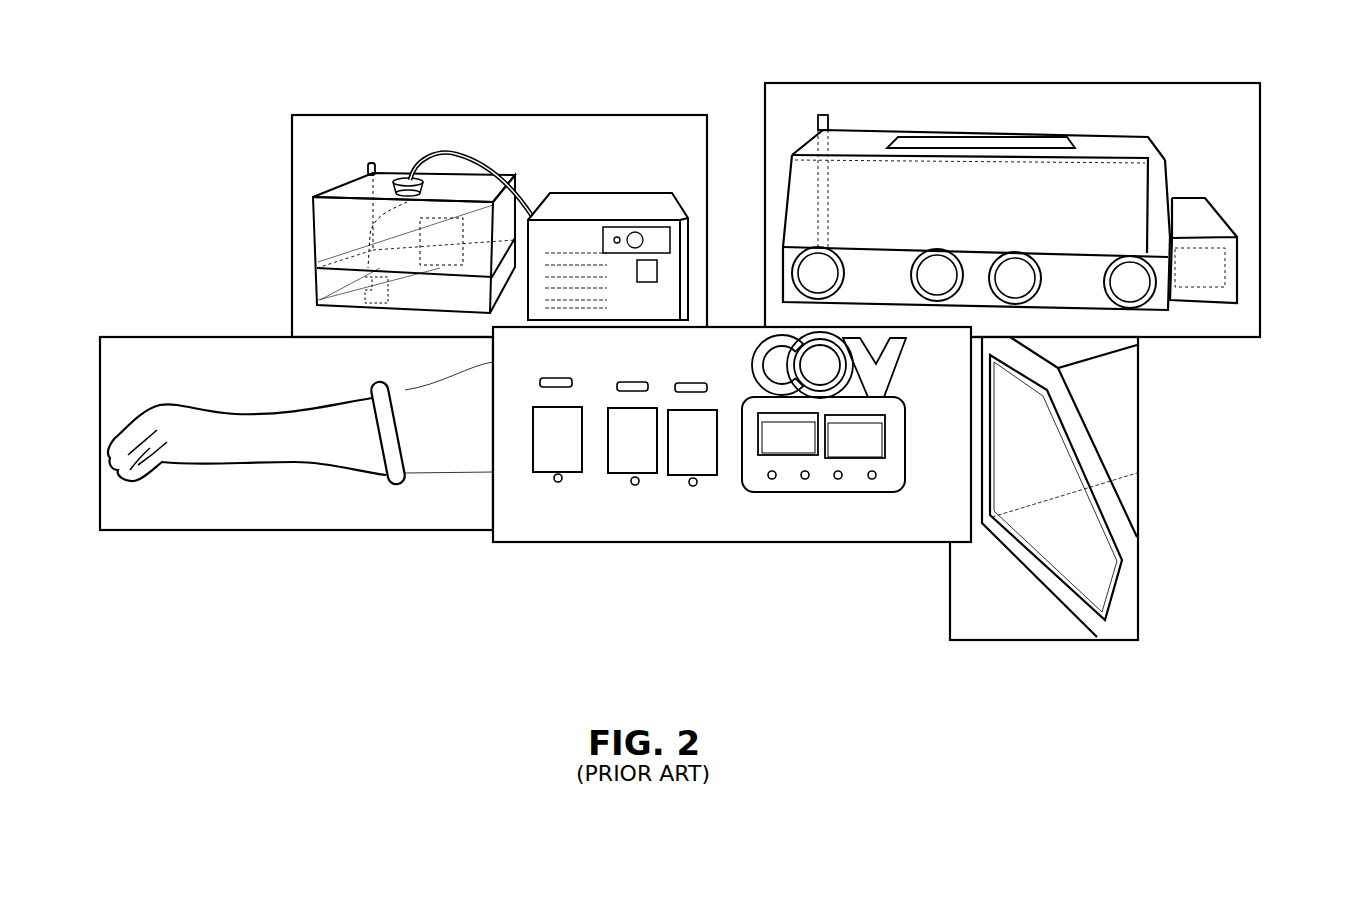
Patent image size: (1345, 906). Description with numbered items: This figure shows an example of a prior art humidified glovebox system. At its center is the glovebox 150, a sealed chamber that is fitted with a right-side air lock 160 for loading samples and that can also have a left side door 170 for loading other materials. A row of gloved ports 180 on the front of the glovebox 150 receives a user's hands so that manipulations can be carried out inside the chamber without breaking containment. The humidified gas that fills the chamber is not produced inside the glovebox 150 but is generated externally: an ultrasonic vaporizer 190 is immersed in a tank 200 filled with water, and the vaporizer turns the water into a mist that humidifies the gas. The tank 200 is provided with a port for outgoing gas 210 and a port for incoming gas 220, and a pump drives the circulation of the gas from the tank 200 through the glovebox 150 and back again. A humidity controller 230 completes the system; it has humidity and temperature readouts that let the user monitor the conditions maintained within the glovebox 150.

The glovebox 150 is at (872, 183).
The right-side air lock 160 is at (1217, 265).
The left side door 170 is at (1022, 522).
The gloved ports 180 is at (945, 258).
The ultrasonic vaporizer 190 is at (370, 295).
The tank 200 is at (330, 213).
The port for outgoing gas 210 is at (455, 162).
The port for incoming gas 220 is at (372, 163).
The humidity controller 230 is at (755, 492).